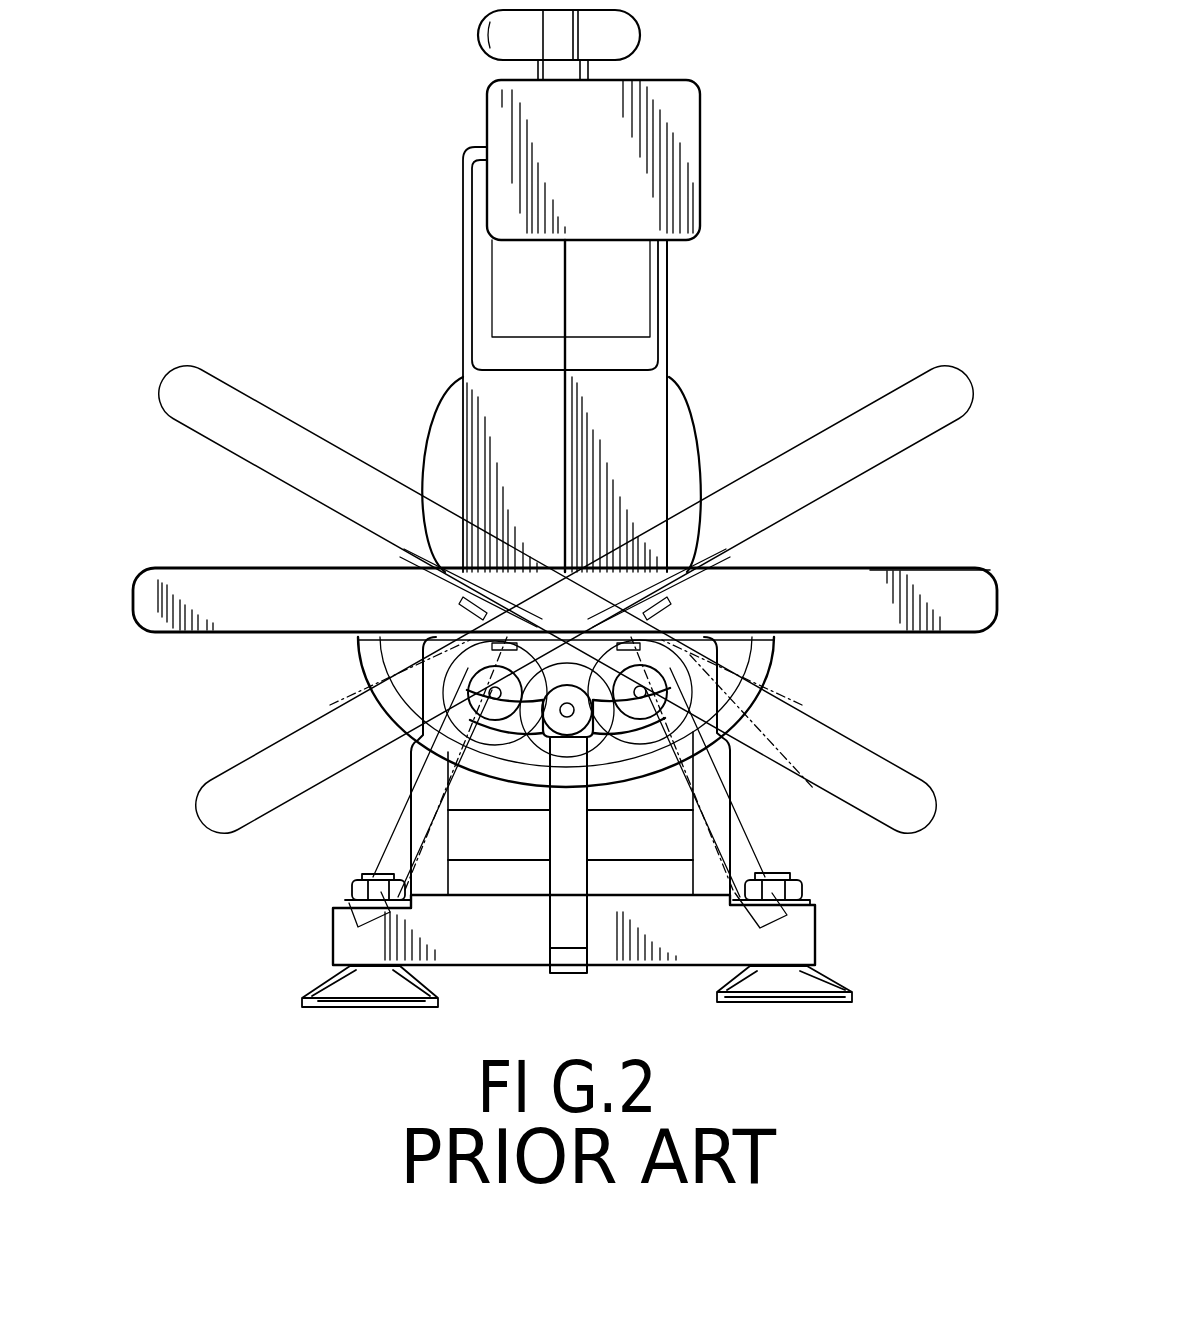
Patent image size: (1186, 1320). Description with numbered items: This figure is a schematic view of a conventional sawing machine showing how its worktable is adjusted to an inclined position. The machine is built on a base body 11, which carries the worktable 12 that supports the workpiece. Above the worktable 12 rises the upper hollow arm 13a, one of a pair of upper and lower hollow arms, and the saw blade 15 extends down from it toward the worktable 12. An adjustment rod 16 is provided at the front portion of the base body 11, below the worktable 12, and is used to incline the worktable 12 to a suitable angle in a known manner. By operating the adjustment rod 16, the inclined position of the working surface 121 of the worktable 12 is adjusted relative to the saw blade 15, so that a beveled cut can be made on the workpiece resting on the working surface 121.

The upper hollow arm 13a is at (680, 139).
The saw blade 15 is at (567, 293).
The worktable 12 is at (850, 582).
The working surface 121 is at (925, 567).
The adjustment rod 16 is at (561, 912).
The base body 11 is at (710, 940).